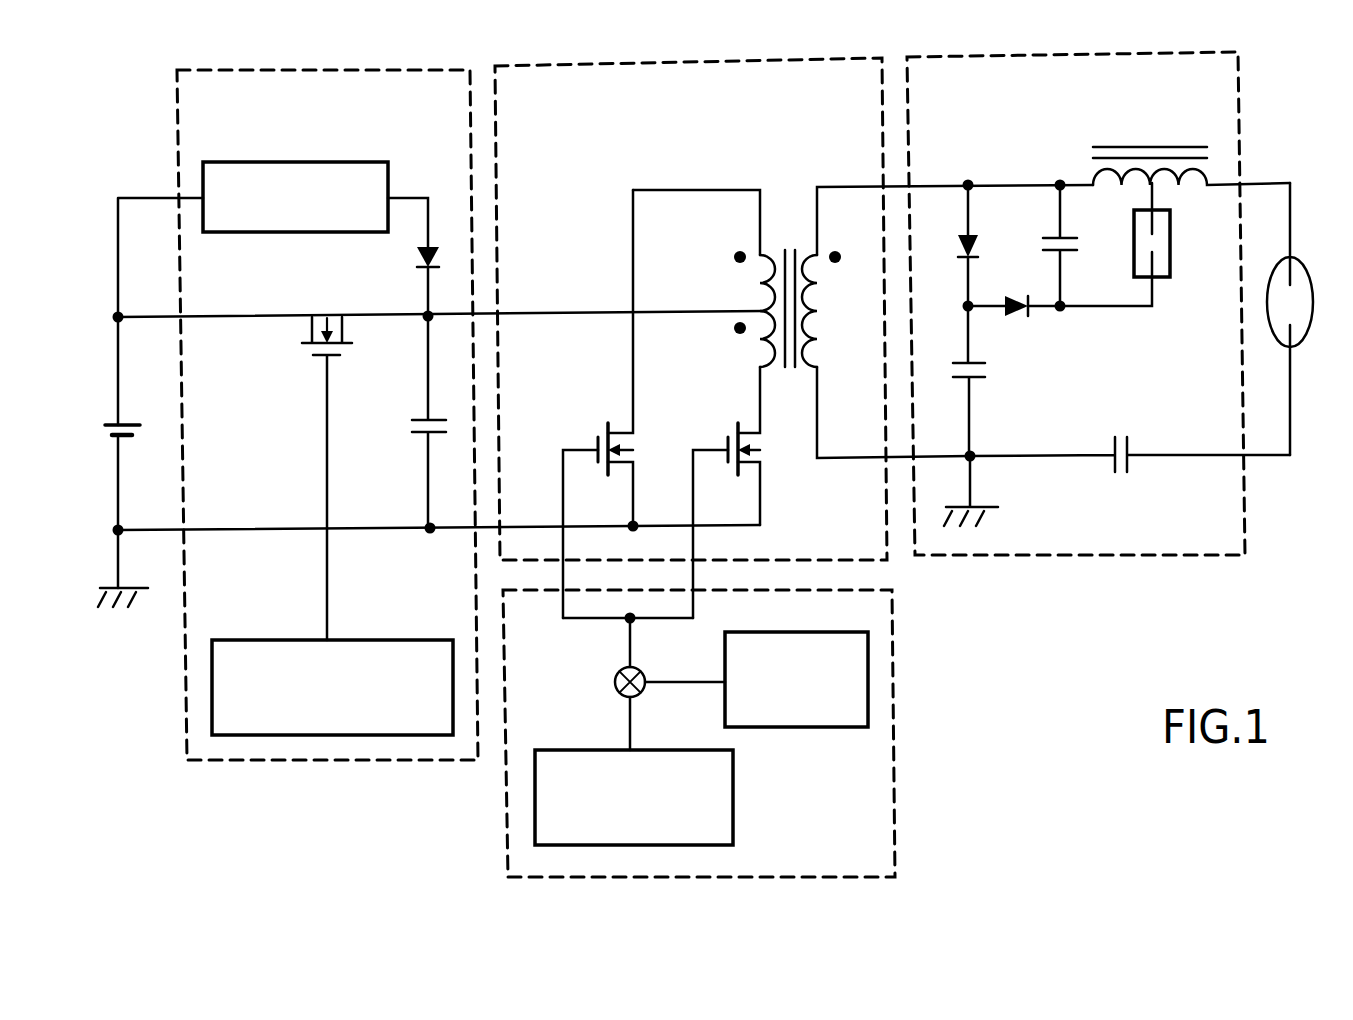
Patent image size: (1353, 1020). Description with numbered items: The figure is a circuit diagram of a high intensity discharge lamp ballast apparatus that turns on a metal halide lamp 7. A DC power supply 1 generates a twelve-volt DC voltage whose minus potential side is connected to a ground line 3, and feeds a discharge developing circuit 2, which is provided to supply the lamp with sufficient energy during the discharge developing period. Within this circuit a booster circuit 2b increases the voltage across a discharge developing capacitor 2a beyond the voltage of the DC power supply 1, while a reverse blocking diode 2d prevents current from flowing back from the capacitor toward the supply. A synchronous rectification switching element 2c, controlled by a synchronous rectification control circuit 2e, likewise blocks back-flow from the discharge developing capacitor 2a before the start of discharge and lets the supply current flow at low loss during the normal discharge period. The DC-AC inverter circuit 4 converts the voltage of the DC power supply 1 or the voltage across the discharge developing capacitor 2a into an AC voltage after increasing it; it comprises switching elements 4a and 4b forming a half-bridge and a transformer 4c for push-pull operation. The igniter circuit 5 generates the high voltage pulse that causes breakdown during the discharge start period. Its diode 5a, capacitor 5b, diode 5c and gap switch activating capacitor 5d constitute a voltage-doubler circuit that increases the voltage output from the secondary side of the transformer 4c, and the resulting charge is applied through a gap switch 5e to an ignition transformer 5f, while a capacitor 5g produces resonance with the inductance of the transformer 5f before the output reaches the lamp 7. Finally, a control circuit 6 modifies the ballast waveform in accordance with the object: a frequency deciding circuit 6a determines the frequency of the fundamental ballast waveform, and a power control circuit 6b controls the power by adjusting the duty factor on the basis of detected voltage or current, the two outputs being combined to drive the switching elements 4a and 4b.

The DC power supply 1 is at (98, 435).
The discharge developing circuit 2 is at (418, 68).
The discharge developing capacitor 2a is at (406, 432).
The booster circuit 2b is at (390, 176).
The synchronous rectification switching element 2c is at (298, 355).
The reverse blocking diode 2d is at (408, 259).
The synchronous rectification control circuit 2e is at (400, 639).
The ground line 3 is at (122, 614).
The DC-AC inverter circuit 4 is at (817, 58).
The switching element 4a is at (598, 436).
The switching element 4b is at (726, 436).
The transformer 4c is at (789, 244).
The igniter circuit 5 is at (1162, 51).
The diode 5a is at (985, 247).
The capacitor 5b is at (999, 369).
The diode 5c is at (1020, 293).
The gap switch activating capacitor 5d is at (1083, 249).
The gap switch 5e is at (1173, 245).
The ignition transformer 5f is at (1089, 153).
The capacitor 5g is at (1120, 431).
The control circuit 6 is at (896, 797).
The frequency deciding circuit 6a is at (736, 781).
The power control circuit 6b is at (817, 632).
The metal halide lamp 7 is at (1303, 277).